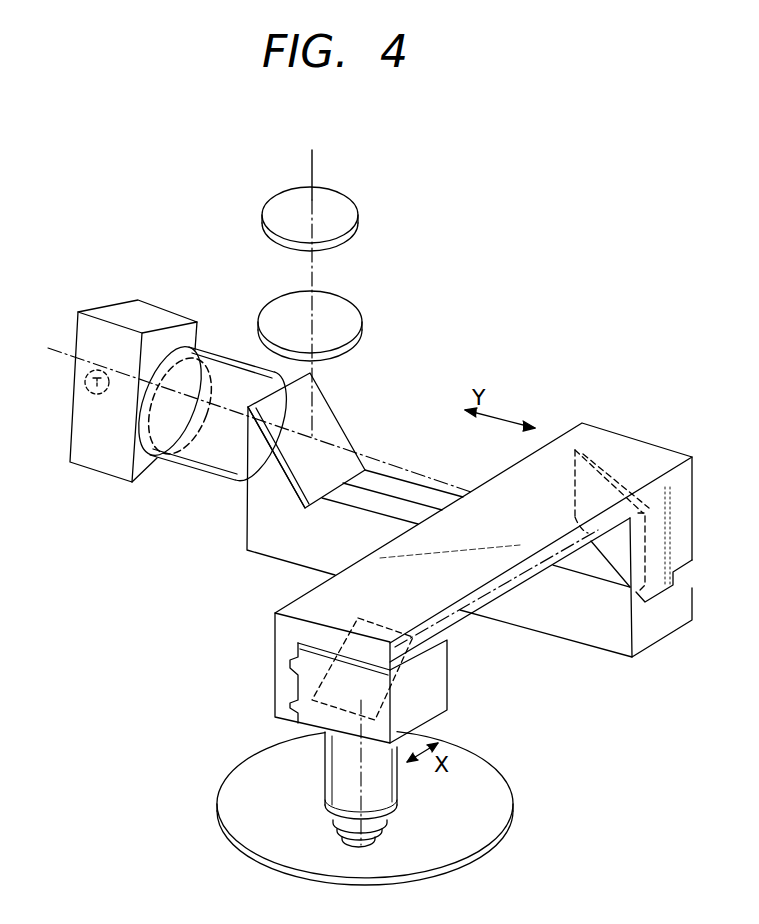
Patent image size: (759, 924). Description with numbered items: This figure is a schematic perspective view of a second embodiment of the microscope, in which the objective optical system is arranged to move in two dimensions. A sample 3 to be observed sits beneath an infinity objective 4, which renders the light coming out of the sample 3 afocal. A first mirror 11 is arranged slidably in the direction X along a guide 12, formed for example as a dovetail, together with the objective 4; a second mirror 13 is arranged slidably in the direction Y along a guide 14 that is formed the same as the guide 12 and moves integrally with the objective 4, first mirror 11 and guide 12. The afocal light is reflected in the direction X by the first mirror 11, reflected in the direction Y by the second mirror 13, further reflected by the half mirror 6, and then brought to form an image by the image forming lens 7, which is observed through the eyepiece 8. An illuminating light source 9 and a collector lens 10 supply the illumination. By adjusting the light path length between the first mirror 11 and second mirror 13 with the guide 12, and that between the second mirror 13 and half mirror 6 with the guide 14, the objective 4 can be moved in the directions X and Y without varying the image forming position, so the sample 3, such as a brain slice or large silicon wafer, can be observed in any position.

The sample 3 is at (492, 842).
The infinity objective 4 is at (395, 790).
The half mirror 6 is at (332, 420).
The image forming lens 7 is at (362, 320).
The eyepiece 8 is at (358, 218).
The illuminating light source 9 is at (88, 377).
The collector lens 10 is at (192, 452).
The first mirror 11 is at (320, 682).
The guide 12 is at (288, 683).
The second mirror 13 is at (595, 462).
The guide 14 is at (662, 587).